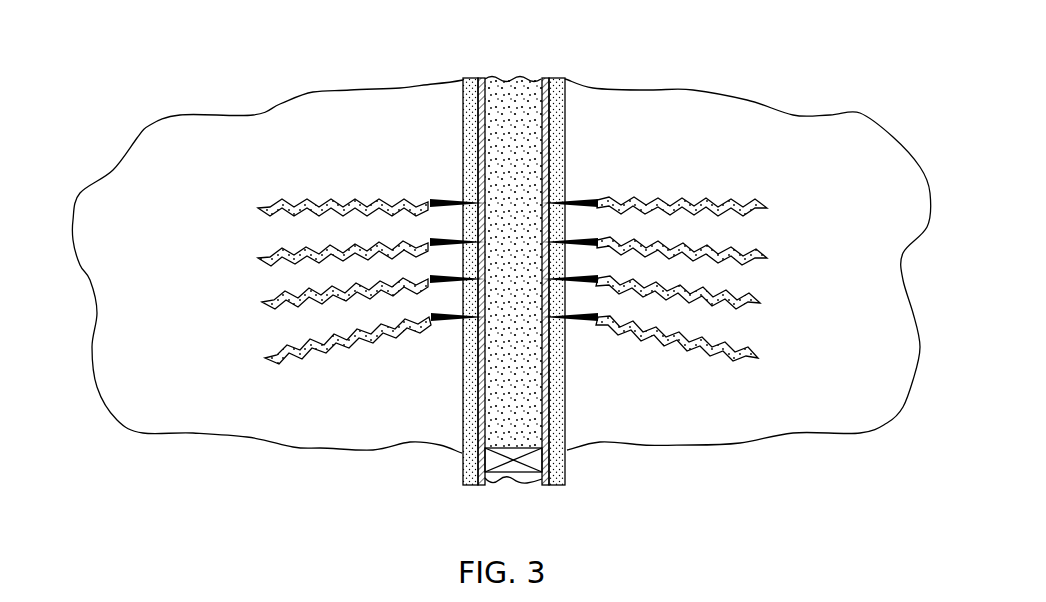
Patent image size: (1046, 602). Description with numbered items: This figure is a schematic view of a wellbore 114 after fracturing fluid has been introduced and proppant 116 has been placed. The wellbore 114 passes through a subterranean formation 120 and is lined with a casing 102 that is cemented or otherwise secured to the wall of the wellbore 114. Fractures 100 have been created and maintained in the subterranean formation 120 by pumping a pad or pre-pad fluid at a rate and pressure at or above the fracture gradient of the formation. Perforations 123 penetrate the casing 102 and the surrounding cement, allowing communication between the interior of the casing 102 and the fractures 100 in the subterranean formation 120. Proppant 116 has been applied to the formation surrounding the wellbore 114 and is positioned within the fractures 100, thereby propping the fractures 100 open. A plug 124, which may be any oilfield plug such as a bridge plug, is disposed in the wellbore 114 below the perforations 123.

The fracture 100 is at (260, 206).
The casing 102 is at (480, 97).
The wellbore 114 is at (470, 78).
The proppant 116 is at (530, 72).
The subterranean formation 120 is at (150, 222).
The perforation 123 is at (573, 238).
The plug 124 is at (510, 478).